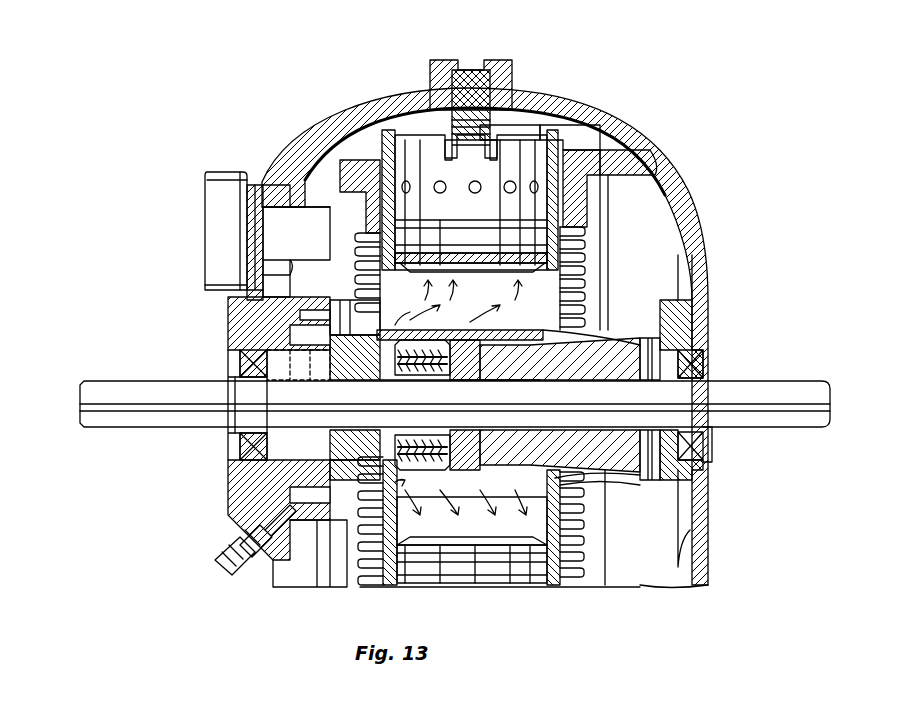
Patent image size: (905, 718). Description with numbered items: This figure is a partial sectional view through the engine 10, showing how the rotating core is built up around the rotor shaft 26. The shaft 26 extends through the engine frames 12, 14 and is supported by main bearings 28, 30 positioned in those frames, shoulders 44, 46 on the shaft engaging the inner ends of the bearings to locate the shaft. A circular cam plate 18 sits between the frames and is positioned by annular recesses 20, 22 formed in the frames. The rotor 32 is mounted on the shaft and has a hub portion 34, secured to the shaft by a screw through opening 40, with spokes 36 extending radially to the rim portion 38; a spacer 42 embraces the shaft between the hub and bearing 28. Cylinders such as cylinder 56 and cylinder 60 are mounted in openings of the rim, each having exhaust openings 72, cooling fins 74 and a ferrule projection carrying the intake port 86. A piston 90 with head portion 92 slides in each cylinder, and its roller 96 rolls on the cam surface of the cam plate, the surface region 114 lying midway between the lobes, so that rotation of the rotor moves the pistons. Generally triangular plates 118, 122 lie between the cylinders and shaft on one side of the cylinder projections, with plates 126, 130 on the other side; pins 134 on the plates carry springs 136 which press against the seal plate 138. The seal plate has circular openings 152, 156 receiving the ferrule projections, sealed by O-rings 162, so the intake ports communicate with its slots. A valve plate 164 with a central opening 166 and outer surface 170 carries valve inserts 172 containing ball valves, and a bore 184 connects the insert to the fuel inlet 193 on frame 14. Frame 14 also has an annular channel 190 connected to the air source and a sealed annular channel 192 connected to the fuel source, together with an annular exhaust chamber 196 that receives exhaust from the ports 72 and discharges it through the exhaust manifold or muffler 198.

The engine 10 is at (680, 137).
The engine frame 12 is at (618, 110).
The engine frame 14 is at (340, 112).
The cam plate 18 is at (480, 128).
The annular recess 20 is at (478, 100).
The annular recess 22 is at (433, 80).
The rotor shaft 26 is at (767, 390).
The main bearing 28 is at (710, 358).
The main bearing 30 is at (240, 365).
The rotor 32 is at (645, 473).
The hub portion 34 is at (672, 345).
The spokes 36 is at (643, 240).
The rim portion 38 is at (607, 172).
The opening 40 is at (645, 348).
The spacer 42 is at (650, 466).
The shoulder 44 is at (707, 440).
The shoulder 46 is at (262, 432).
The cylinder 56 is at (578, 125).
The cylinder 60 is at (557, 582).
The exhaust openings 72 is at (372, 250).
The cooling fins 74 is at (580, 283).
The intake port 86 is at (458, 300).
The piston 90 is at (413, 127).
The head portion 92 is at (565, 240).
The roller 96 is at (505, 138).
The cam surface 114 is at (417, 130).
The plate 118 is at (473, 340).
The plate 122 is at (473, 443).
The plate 126 is at (580, 330).
The plate 130 is at (590, 472).
The pins 134 is at (443, 440).
The springs 136 is at (405, 443).
The seal plate 138 is at (357, 365).
The circular opening 152 is at (362, 352).
The circular opening 156 is at (377, 477).
The O-ring 162 is at (380, 317).
The valve plate 164 is at (315, 298).
The central opening 166 is at (327, 455).
The outer surface 170 is at (265, 277).
The valve insert 172 is at (327, 342).
The bore 184 is at (323, 313).
The annular channel 190 is at (287, 333).
The annular channel 192 is at (327, 322).
The fuel inlet 193 is at (216, 570).
The exhaust chamber 196 is at (307, 192).
The exhaust manifold 198 is at (220, 193).